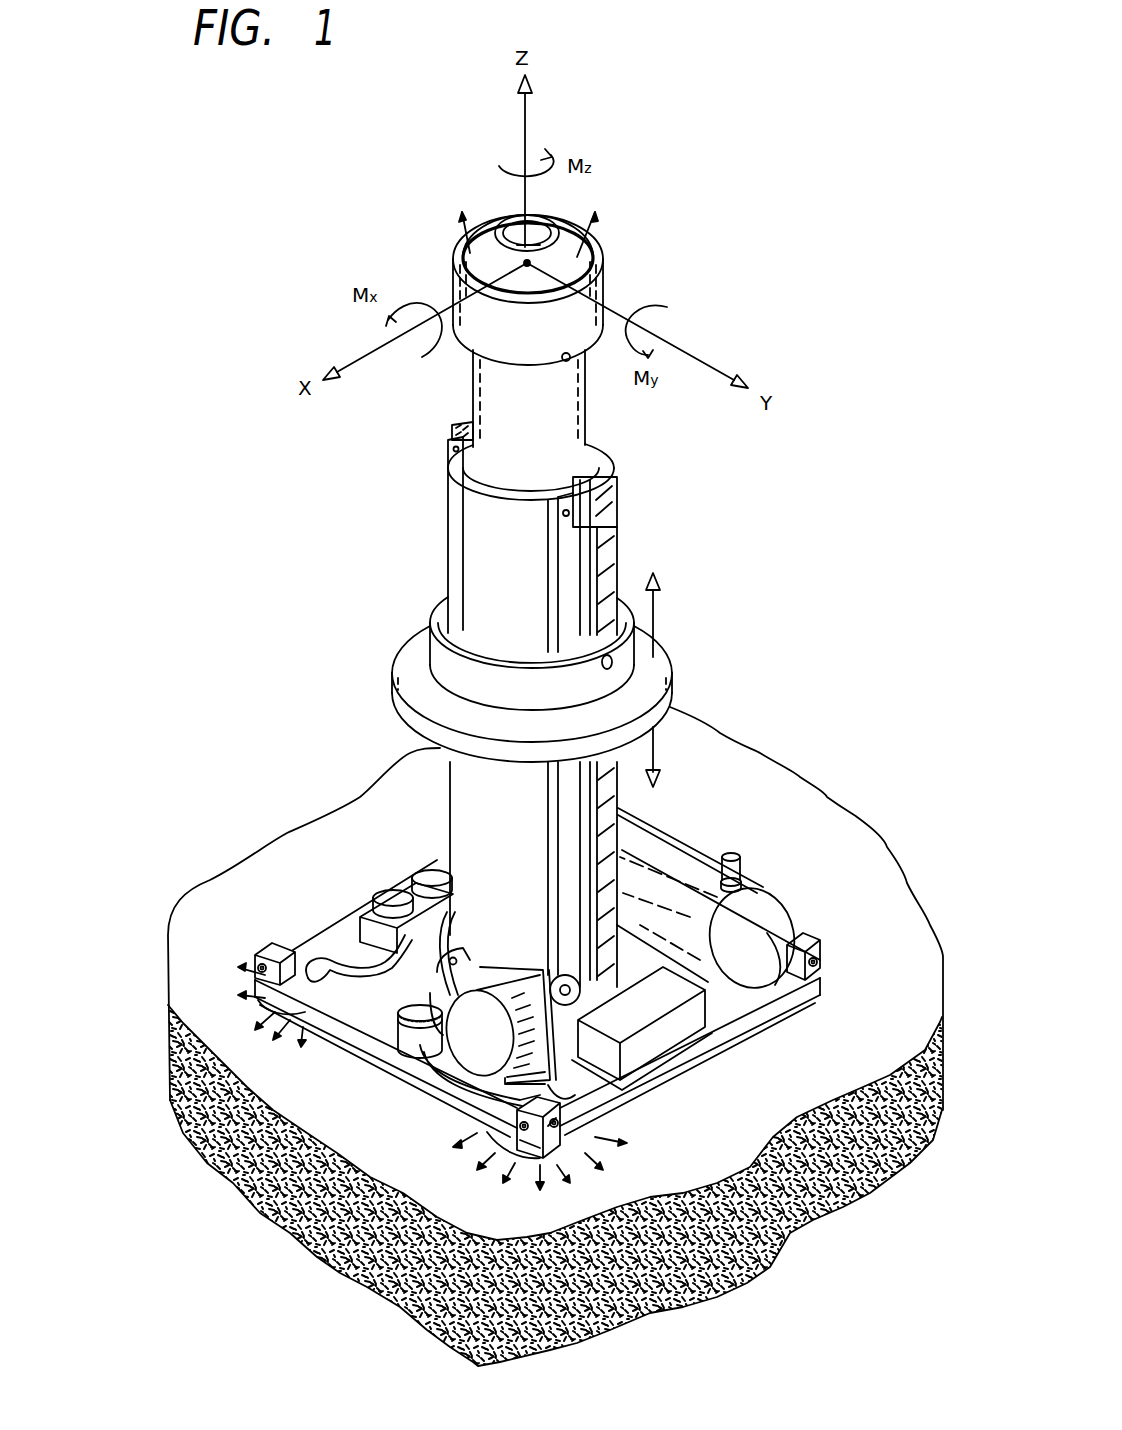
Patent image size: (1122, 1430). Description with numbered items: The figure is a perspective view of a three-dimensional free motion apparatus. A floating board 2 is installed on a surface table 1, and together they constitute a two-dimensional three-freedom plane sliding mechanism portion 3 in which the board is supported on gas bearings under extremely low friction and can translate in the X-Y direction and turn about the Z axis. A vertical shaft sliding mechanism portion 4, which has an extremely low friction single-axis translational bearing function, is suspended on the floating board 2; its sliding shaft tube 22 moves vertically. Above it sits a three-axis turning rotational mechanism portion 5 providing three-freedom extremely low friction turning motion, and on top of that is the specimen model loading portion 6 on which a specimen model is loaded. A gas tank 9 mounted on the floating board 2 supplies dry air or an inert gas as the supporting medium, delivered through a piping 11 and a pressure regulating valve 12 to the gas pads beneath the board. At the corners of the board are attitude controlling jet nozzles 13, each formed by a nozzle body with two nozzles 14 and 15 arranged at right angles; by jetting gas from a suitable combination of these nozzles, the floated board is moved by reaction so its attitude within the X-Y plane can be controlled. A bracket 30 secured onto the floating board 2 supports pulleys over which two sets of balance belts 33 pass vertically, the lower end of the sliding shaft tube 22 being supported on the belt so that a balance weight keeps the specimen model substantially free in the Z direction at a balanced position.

The surface table 1 is at (810, 817).
The floating board 2 is at (707, 1047).
The plane sliding mechanism portion 3 is at (343, 917).
The vertical shaft sliding mechanism portion 4 is at (487, 610).
The 3-axis turning rotational mechanism portion 5 is at (577, 260).
The specimen model loading portion 6 is at (513, 223).
The gas tank 9 is at (767, 910).
The piping 11 is at (450, 1070).
The pressure regulating valve 12 is at (420, 1015).
The attitude controlling jet nozzle 13 is at (258, 952).
The nozzle 14 is at (558, 1124).
The nozzle 15 is at (522, 1124).
The sliding shaft tube 22 is at (567, 403).
The bracket 30 is at (487, 540).
The balance belt 33 is at (465, 423).